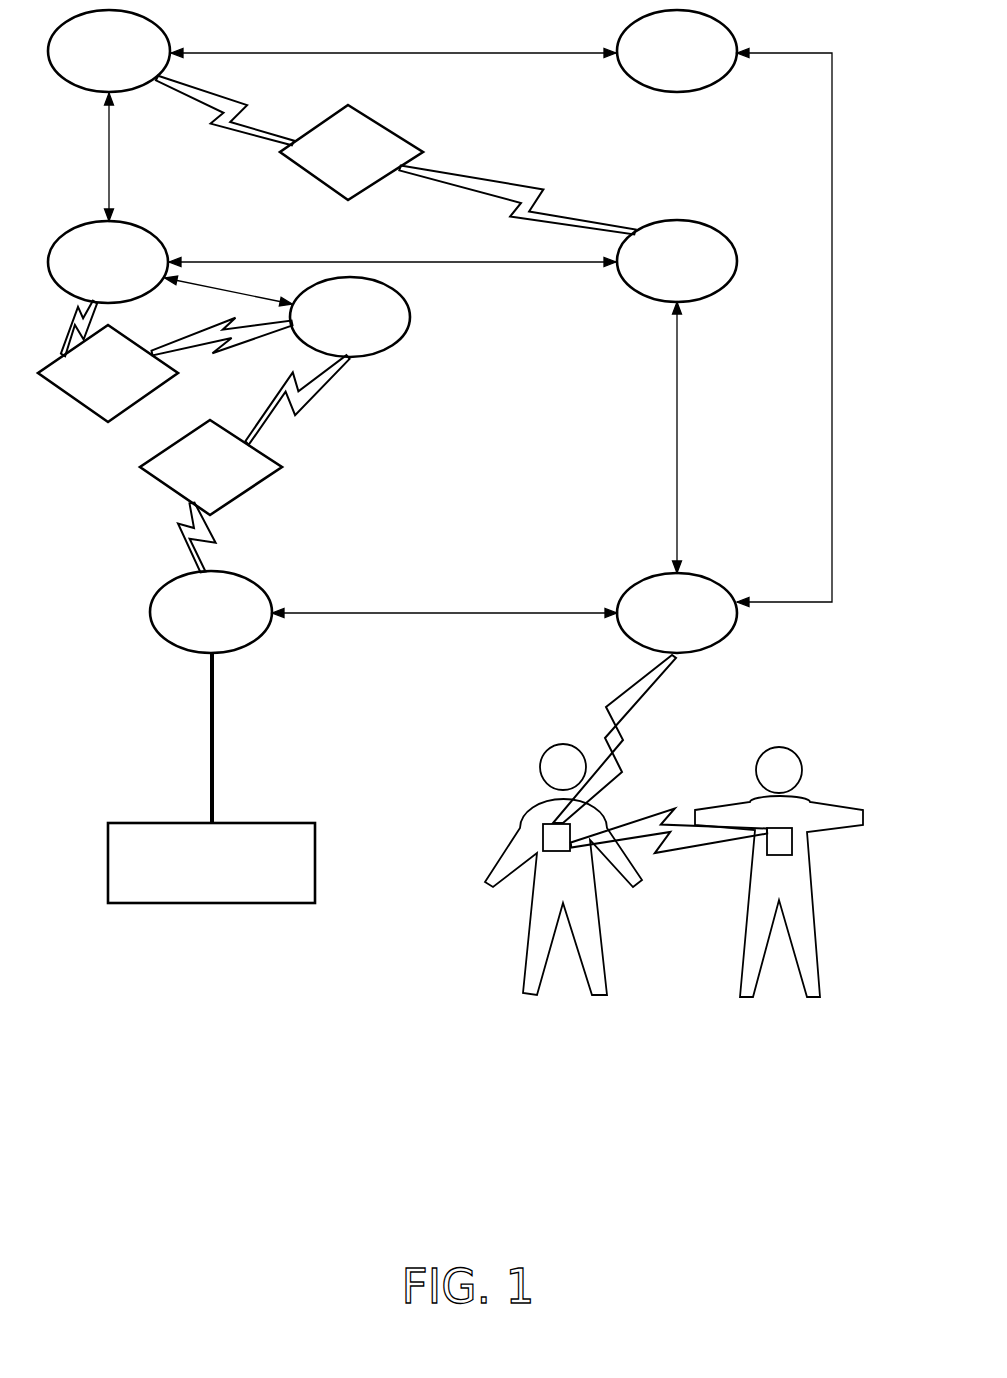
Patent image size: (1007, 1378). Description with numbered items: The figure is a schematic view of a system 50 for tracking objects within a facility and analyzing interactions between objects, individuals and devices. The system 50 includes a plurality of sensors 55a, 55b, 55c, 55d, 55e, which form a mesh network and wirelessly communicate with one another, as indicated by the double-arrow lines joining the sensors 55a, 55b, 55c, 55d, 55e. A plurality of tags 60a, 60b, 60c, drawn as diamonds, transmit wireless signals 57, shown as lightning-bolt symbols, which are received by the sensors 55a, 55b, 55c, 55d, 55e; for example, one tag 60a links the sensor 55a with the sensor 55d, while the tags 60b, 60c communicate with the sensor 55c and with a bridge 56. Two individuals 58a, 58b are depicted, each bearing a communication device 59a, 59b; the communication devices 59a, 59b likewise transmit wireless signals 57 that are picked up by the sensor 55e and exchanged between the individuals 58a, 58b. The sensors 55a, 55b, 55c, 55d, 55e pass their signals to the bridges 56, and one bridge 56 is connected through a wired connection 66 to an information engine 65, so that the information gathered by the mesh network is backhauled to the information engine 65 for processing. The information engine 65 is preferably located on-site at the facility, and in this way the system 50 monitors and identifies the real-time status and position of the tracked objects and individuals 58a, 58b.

The system 50 is at (807, 640).
The sensor 55a is at (109, 51).
The sensor 55b is at (677, 51).
The sensor 55c is at (350, 317).
The sensor 55d is at (677, 261).
The sensor 55e is at (677, 613).
The bridge 56 is at (160, 437).
The wireless signal 57 is at (532, 187).
The tag 60a is at (351, 152).
The tag 60b is at (211, 467).
The tag 60c is at (108, 373).
The individual 58a is at (530, 983).
The individual 58b is at (745, 978).
The communication device 59a is at (541, 822).
The communication device 59b is at (778, 830).
The information engine 65 is at (211, 863).
The wired connection 66 is at (210, 708).